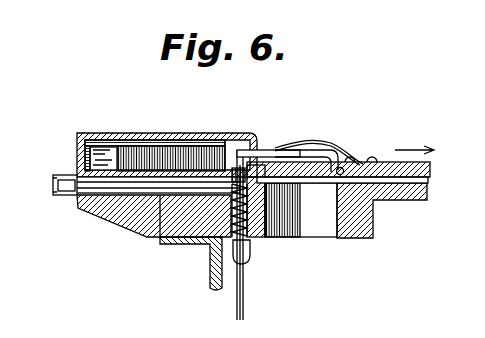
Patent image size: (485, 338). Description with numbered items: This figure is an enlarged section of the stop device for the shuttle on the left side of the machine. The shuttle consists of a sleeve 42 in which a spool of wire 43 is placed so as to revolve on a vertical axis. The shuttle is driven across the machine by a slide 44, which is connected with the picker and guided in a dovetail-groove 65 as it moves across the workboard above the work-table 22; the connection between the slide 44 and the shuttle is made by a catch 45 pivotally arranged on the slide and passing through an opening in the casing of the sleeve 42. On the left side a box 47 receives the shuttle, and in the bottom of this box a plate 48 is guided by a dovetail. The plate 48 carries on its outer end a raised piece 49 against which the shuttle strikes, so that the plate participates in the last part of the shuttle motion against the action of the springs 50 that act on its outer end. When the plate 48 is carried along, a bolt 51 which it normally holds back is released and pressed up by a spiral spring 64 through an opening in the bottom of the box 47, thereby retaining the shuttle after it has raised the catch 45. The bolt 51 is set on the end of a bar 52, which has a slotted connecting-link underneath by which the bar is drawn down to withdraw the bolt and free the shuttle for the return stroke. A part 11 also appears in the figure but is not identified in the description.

The box 47 is at (112, 133).
The spool of wire 43 is at (172, 138).
The sleeve 42 is at (257, 150).
The bolt 51 is at (278, 150).
The catch 45 is at (296, 152).
The slide 44 is at (372, 162).
The dovetail-groove 65 is at (426, 180).
The work-table 22 is at (406, 196).
The frame 11 is at (366, 212).
The plate 48 is at (67, 176).
The springs 50 is at (58, 184).
The raised piece 49 is at (77, 191).
The spiral spring 64 is at (248, 207).
The bar 52 is at (248, 302).